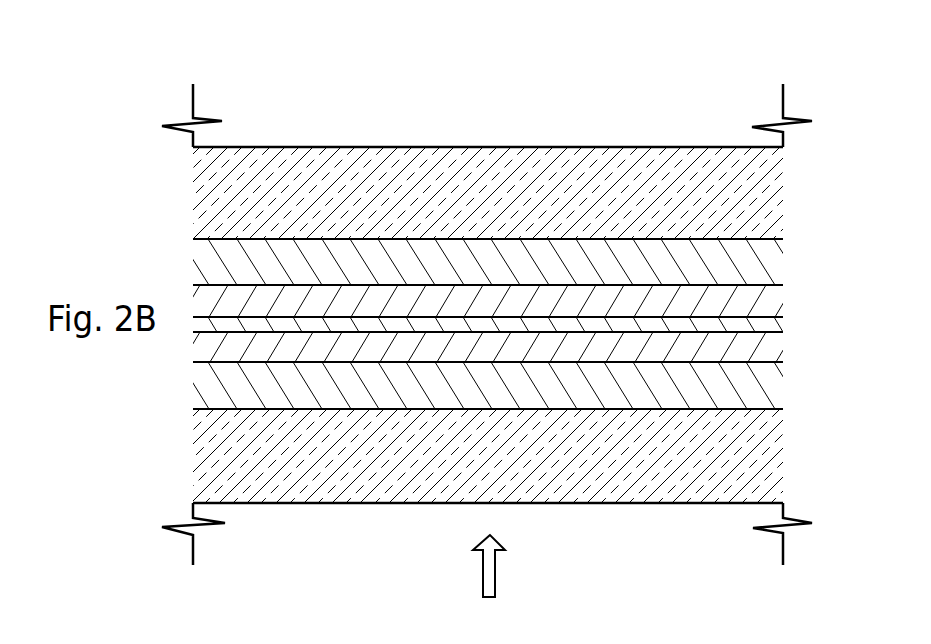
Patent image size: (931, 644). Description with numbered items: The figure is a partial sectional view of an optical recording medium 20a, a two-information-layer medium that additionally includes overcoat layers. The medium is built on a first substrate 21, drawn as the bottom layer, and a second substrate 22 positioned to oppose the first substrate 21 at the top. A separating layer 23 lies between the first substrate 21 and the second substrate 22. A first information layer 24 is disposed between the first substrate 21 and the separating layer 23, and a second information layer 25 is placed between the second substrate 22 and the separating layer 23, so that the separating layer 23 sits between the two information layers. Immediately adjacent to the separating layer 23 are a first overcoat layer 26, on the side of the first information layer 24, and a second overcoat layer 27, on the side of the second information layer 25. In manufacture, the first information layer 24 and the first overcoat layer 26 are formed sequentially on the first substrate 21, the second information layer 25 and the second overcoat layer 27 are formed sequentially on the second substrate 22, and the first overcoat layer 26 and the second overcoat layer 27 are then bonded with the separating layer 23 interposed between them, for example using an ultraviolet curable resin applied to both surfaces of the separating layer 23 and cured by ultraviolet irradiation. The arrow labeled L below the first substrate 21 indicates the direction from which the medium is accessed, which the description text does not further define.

The optical recording medium 20a is at (267, 72).
The first substrate 21 is at (783, 472).
The second substrate 22 is at (783, 193).
The separating layer 23 is at (783, 323).
The first information layer 24 is at (783, 387).
The second information layer 25 is at (783, 260).
The first overcoat layer 26 is at (783, 347).
The second overcoat layer 27 is at (783, 298).
The light L is at (495, 580).